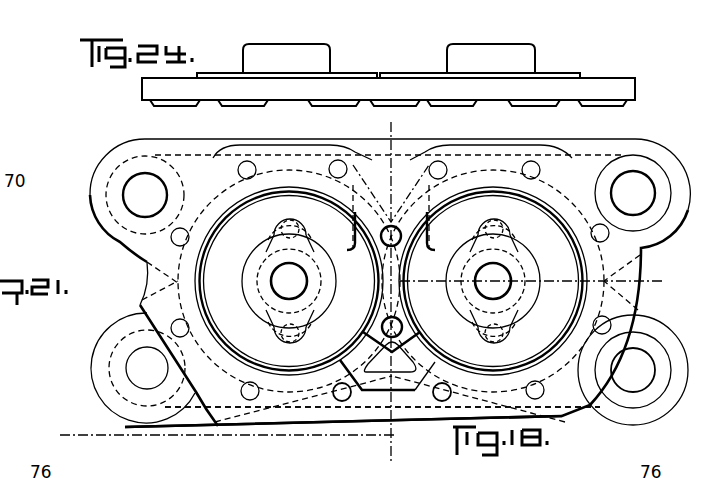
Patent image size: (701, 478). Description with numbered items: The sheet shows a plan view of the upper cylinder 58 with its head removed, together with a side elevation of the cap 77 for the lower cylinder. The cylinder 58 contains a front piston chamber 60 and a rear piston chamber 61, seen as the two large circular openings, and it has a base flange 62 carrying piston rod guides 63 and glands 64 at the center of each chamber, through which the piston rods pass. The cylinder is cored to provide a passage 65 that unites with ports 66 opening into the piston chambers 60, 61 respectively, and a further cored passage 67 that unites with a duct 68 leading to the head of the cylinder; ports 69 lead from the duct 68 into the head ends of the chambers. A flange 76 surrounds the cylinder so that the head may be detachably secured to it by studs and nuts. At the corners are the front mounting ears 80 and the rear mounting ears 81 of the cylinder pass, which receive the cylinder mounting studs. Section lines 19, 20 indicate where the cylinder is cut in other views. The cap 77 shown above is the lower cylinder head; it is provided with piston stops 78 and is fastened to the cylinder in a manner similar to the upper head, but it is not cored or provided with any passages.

In FIG. 18, the section line 19 is at (95, 429).
In FIG. 18, the section line 20 is at (397, 141).
In FIG. 18, the upper cylinder 58 is at (556, 150).
In FIG. 18, the front piston chamber 60 is at (493, 281).
In FIG. 18, the rear piston chamber 61 is at (289, 281).
In FIG. 18, the base flange 62 is at (190, 427).
In FIG. 18, the piston rod guide 63 is at (327, 295).
In FIG. 18, the gland 64 is at (270, 296).
In FIG. 18, the passage 65 is at (228, 131).
In FIG. 18, the port 66 is at (392, 250).
In FIG. 18, the cored passage 67 is at (226, 436).
In FIG. 18, the duct 68 is at (402, 380).
In FIG. 18, the port 69 is at (392, 326).
In FIG. 18, the flange 76 is at (143, 262).
In FIG. 24, the cap for the lower cylinder 77 is at (382, 73).
In FIG. 24, the piston stop 78 is at (331, 66).
In FIG. 18, the front mounting ear 80 is at (653, 142).
In FIG. 18, the rear mounting ear 81 is at (102, 211).